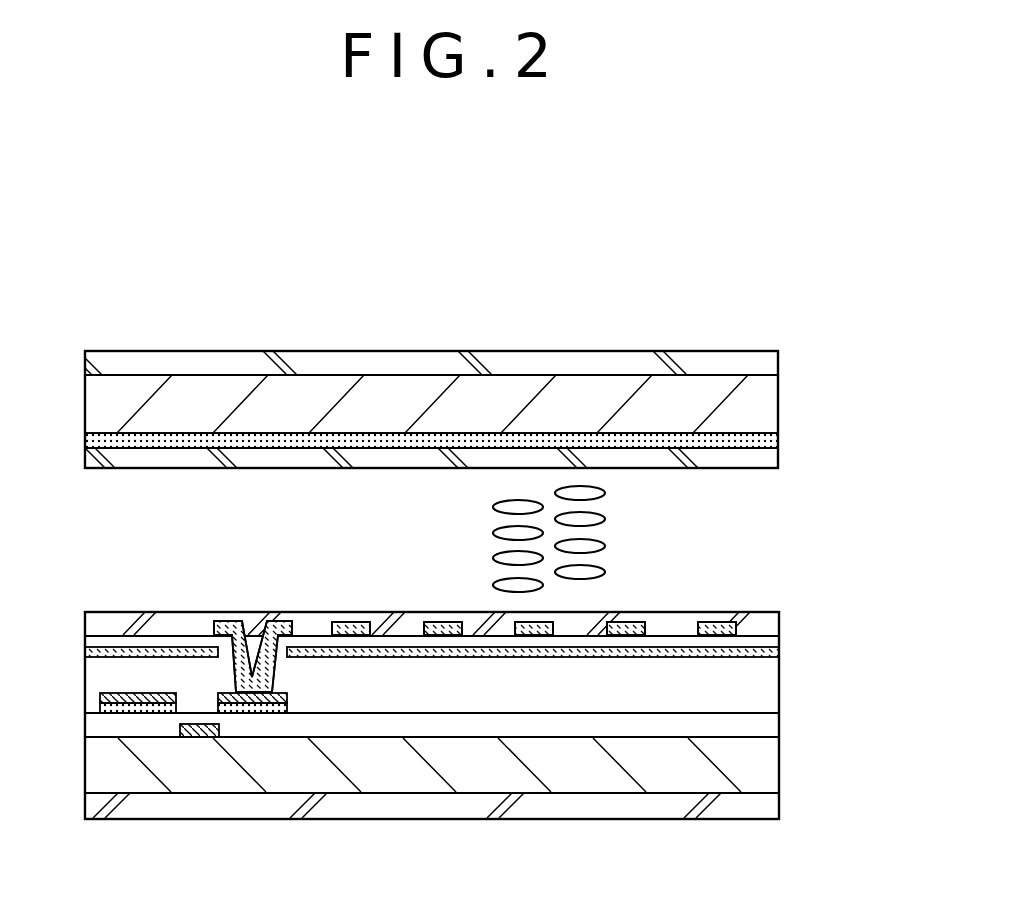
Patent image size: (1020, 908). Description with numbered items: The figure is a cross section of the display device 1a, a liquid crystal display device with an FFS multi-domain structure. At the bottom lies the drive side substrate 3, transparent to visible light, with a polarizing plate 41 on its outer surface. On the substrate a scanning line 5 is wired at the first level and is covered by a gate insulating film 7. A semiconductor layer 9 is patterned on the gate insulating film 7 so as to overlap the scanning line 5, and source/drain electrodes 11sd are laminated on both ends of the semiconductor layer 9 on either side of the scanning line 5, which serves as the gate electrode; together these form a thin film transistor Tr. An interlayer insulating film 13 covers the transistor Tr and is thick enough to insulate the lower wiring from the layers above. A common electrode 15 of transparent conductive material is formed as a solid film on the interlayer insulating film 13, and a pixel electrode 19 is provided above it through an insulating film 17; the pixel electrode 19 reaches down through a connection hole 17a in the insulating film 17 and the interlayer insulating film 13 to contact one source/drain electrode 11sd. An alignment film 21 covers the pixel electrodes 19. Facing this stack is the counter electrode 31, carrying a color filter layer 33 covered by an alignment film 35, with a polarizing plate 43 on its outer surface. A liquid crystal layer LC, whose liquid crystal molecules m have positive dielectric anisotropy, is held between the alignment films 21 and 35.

The display device 1a is at (125, 250).
The polarizing plate 43 is at (412, 351).
The counter electrode 31 is at (745, 375).
The color filter layer 33 is at (779, 441).
The alignment film 35 is at (779, 457).
The liquid crystal layer LC is at (646, 539).
The liquid crystal molecule m is at (492, 503).
The drive side substrate 3 is at (779, 766).
The polarizing plate 41 is at (585, 819).
The interlayer insulating film 13 is at (779, 690).
The insulating film 17 is at (779, 640).
The common electrode 15 is at (779, 655).
The thin film transistor Tr is at (215, 722).
The scanning line 5 is at (197, 737).
The gate insulating film 7 is at (262, 737).
The source/drain electrode 11sd is at (117, 693).
The semiconductor layer 9 is at (100, 705).
The connection hole 17a is at (222, 652).
The pixel electrode 19 is at (283, 620).
The alignment film 21 is at (642, 612).